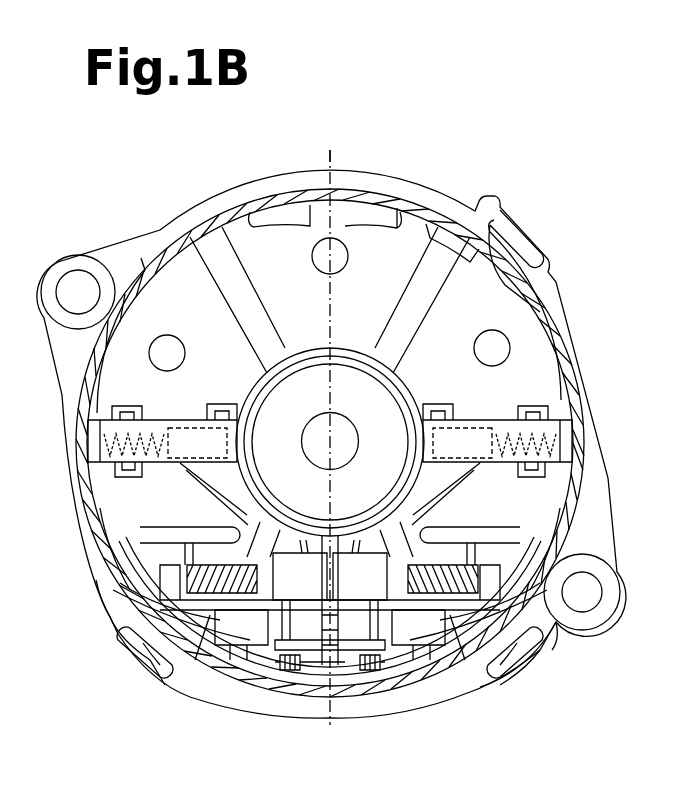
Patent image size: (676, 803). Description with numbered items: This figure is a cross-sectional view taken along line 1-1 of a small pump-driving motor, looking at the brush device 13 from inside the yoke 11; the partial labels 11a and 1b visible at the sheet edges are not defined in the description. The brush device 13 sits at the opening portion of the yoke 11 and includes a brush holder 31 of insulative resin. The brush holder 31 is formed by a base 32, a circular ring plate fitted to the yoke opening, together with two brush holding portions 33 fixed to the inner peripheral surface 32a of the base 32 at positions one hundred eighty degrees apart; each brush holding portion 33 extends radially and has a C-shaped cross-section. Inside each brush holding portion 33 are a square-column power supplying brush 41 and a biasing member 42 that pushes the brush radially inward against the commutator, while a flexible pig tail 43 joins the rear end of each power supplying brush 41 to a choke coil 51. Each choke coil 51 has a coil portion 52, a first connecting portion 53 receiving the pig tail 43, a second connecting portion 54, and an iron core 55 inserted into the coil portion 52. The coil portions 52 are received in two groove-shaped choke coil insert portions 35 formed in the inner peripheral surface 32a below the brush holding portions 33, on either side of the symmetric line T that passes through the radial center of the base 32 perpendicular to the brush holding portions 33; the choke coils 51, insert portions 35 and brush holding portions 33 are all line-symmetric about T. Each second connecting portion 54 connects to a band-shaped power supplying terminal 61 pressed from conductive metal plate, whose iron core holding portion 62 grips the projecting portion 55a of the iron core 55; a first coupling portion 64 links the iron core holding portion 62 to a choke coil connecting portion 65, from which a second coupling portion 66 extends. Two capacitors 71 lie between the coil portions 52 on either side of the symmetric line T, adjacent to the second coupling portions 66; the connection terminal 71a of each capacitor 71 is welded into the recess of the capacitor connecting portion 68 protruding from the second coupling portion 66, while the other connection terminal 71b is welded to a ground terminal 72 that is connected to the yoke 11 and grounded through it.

The symmetric line T is at (340, 157).
The brush device 13 is at (438, 208).
The yoke 11 is at (572, 290).
The mounting lug 11a is at (176, 248).
The brush holder 31 is at (232, 214).
The base 32 is at (500, 220).
The inner peripheral surface 32a is at (300, 214).
The brush holding portion 33 is at (212, 412).
The power supplying brush 41 is at (238, 444).
The biasing member 42 is at (152, 418).
The pig tail 43 is at (186, 472).
The choke coil insert portion 35 is at (203, 565).
The capacitor connecting portion 68 is at (285, 548).
The capacitor 71 is at (319, 540).
The connection terminal 71a is at (330, 576).
The connection terminal 71b is at (340, 666).
The ground terminal 72 is at (320, 652).
The choke coil 51 is at (162, 660).
The coil portion 52 is at (205, 662).
The first connecting portion 53 is at (100, 510).
The second connecting portion 54 is at (258, 660).
The iron core 55 is at (158, 590).
The projecting portion 55a is at (125, 545).
The power supplying terminal 61 is at (118, 622).
The iron core holding portion 62 is at (120, 614).
The first coupling portion 64 is at (165, 670).
The choke coil connecting portion 65 is at (238, 650).
The second coupling portion 66 is at (298, 672).
The housing portion 1b is at (85, 578).
The section line 1 is at (14, 625).